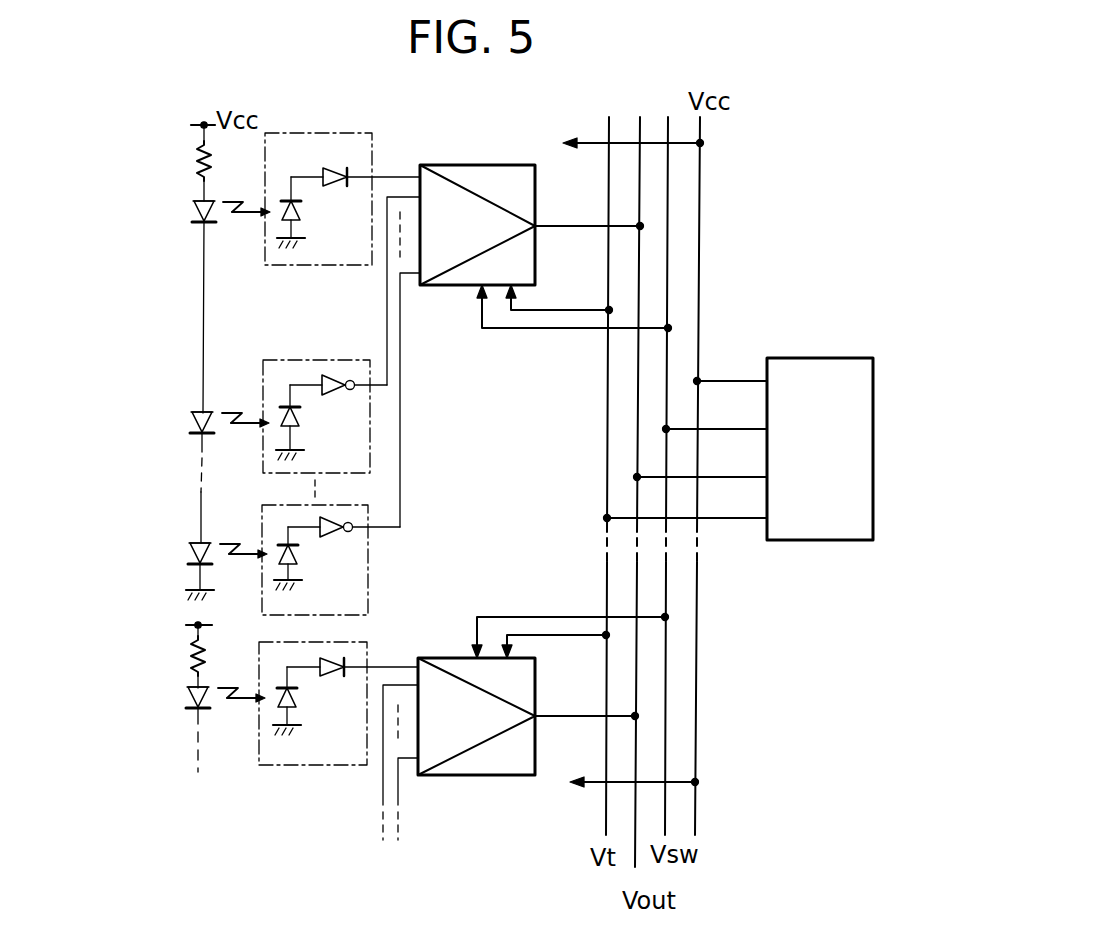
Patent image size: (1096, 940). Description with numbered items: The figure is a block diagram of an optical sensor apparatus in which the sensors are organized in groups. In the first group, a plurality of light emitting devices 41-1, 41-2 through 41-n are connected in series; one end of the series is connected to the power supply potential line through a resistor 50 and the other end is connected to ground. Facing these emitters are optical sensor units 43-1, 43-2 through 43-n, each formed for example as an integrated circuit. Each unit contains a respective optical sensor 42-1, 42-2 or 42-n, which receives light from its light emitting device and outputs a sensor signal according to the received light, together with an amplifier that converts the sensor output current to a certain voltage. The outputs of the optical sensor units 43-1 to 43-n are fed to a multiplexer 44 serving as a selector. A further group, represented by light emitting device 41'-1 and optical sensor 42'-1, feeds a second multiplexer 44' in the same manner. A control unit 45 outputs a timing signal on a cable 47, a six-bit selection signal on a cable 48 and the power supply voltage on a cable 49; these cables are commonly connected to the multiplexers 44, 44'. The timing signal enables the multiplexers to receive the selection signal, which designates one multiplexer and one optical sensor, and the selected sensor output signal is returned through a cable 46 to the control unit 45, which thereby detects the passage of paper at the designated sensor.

The resistor 50 is at (196, 169).
The light emitting device 41-1 is at (192, 213).
The light emitting device 41-2 is at (208, 416).
The light emitting device 41-n is at (190, 554).
The light emitting device 41'-1 is at (154, 703).
The optical sensor 42-1 is at (302, 218).
The optical sensor 42-2 is at (300, 424).
The optical sensor 42-n is at (298, 562).
The optical sensor 42'-1 is at (324, 701).
The optical sensor unit 43-1 is at (335, 133).
The optical sensor unit 43-2 is at (278, 360).
The optical sensor unit 43-n is at (368, 592).
The multiplexer 44 is at (477, 195).
The multiplexer 44' is at (476, 743).
The control unit 45 is at (828, 366).
The cable 46 is at (640, 255).
The cable 47 is at (606, 384).
The cable 48 is at (666, 403).
The cable 49 is at (700, 304).